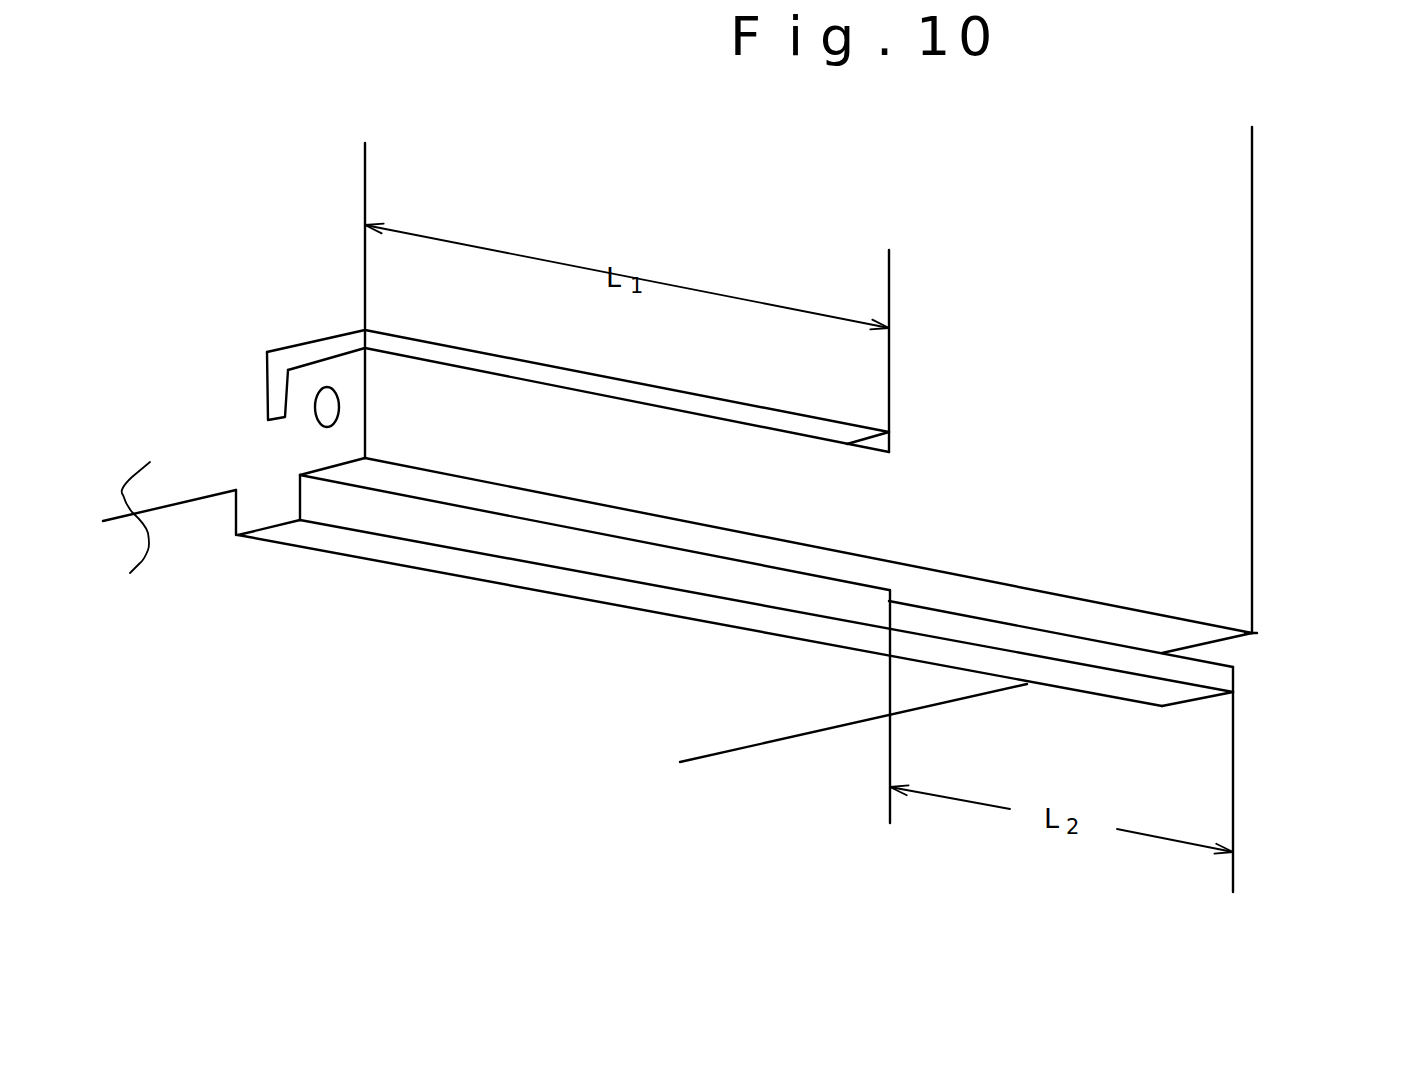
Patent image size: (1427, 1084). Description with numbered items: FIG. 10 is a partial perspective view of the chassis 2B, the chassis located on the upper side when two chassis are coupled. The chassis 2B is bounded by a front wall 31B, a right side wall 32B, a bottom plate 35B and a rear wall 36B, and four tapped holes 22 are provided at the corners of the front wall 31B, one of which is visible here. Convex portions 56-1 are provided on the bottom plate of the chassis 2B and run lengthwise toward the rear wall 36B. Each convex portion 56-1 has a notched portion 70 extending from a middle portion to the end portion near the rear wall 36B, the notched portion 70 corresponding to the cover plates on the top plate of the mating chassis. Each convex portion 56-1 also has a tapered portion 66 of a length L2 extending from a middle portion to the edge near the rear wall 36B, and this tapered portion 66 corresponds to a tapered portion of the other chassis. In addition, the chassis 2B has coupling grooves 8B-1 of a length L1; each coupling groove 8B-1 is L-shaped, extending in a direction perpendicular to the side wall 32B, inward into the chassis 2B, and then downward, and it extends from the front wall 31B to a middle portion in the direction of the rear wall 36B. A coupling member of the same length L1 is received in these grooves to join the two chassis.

The chassis 2B is at (1282, 324).
The coupling groove 8B-1 is at (307, 360).
The tapped hole 22 is at (327, 407).
The front wall 31B is at (169, 540).
The right side wall 32B is at (1213, 566).
The bottom plate 35B is at (780, 718).
The rear wall 36B is at (1252, 455).
The convex portion 56-1 is at (537, 552).
The tapered portion 66 is at (1130, 672).
The notched portion 70 is at (1022, 620).